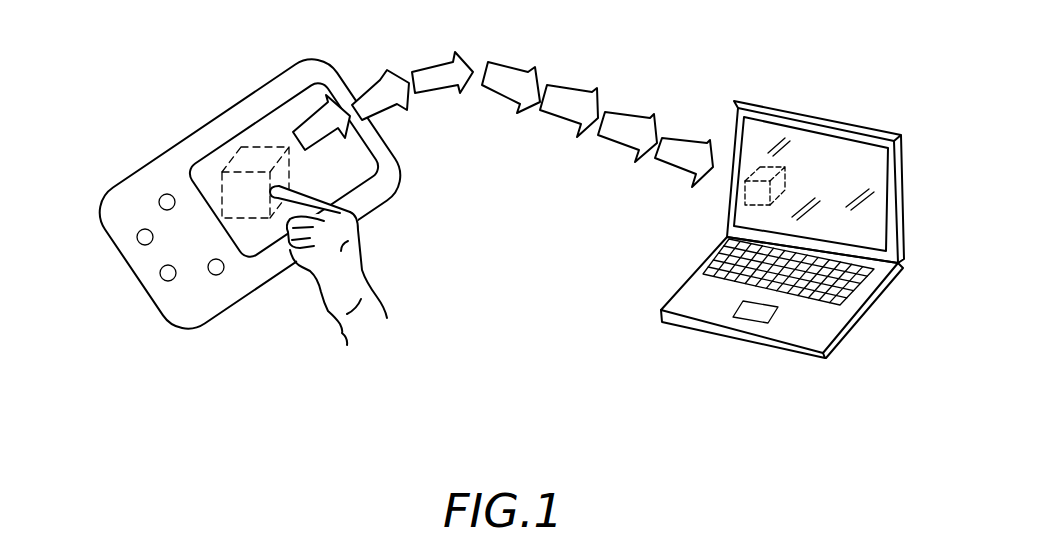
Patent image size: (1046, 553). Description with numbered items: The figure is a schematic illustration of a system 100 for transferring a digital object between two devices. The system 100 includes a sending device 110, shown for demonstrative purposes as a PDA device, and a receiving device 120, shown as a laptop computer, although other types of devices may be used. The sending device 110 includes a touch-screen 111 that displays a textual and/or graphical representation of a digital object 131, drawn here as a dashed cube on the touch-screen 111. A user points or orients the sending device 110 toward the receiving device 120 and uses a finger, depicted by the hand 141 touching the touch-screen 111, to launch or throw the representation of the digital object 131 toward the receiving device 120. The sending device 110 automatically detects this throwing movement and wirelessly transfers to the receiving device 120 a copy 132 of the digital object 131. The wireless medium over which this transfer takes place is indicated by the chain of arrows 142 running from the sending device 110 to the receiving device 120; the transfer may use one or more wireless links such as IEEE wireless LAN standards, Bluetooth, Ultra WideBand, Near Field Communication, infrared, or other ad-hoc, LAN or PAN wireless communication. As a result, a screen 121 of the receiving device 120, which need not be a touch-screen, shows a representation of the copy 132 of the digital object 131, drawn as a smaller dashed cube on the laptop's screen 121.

The system 100 is at (535, 332).
The sending device 110 is at (115, 191).
The touch-screen 111 is at (206, 176).
The digital object 131 is at (291, 147).
The user hand (drag gesture) 141 is at (370, 274).
The arrows 142 is at (438, 97).
The receiving device 120 is at (743, 341).
The screen 121 is at (835, 168).
The copy of the digital object 132 is at (765, 175).